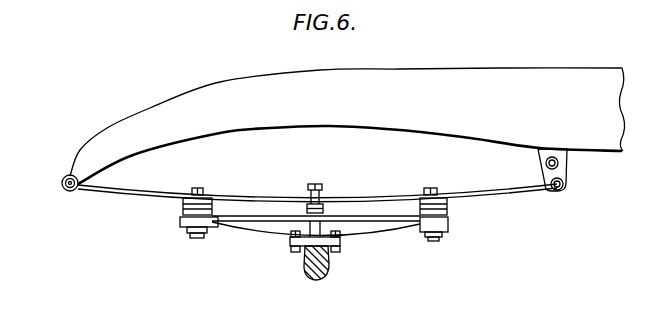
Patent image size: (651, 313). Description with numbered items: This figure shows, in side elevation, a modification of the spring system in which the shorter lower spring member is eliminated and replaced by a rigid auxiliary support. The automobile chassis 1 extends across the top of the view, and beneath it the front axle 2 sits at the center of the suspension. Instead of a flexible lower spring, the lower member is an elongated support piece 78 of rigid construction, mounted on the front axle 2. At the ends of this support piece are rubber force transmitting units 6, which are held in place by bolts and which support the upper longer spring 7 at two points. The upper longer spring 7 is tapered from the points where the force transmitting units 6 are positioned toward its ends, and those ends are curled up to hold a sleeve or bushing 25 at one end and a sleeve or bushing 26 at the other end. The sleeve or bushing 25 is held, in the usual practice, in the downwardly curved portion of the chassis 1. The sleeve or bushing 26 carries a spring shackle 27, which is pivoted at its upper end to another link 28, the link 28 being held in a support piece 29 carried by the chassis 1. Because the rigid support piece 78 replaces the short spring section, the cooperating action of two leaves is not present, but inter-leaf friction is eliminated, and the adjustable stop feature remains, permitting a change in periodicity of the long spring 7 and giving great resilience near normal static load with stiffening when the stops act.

The automobile chassis 1 is at (524, 69).
The front axle 2 is at (306, 274).
The rubber force transmitting units 6 is at (184, 212).
The upper longer spring 7 is at (255, 196).
The elongated support piece 78 is at (378, 228).
The sleeve or bushing 25 is at (62, 188).
The sleeve or bushing 26 is at (564, 186).
The spring shackle 27 is at (566, 172).
The link 28 is at (546, 165).
The support piece 29 is at (537, 153).